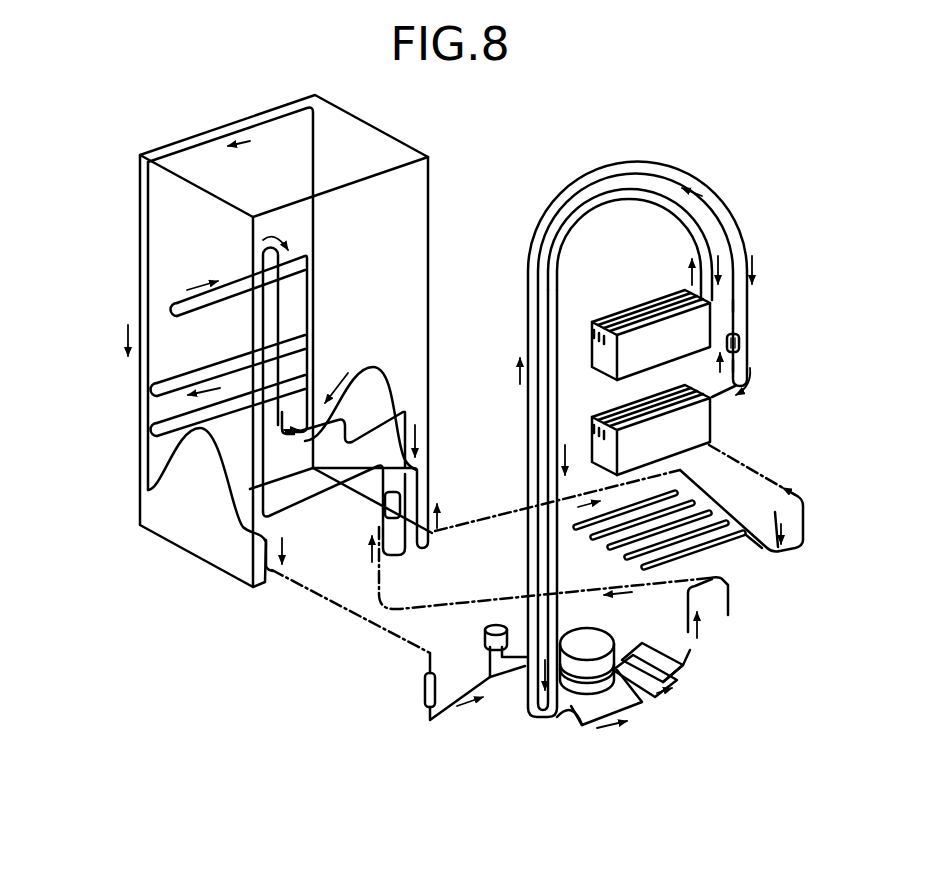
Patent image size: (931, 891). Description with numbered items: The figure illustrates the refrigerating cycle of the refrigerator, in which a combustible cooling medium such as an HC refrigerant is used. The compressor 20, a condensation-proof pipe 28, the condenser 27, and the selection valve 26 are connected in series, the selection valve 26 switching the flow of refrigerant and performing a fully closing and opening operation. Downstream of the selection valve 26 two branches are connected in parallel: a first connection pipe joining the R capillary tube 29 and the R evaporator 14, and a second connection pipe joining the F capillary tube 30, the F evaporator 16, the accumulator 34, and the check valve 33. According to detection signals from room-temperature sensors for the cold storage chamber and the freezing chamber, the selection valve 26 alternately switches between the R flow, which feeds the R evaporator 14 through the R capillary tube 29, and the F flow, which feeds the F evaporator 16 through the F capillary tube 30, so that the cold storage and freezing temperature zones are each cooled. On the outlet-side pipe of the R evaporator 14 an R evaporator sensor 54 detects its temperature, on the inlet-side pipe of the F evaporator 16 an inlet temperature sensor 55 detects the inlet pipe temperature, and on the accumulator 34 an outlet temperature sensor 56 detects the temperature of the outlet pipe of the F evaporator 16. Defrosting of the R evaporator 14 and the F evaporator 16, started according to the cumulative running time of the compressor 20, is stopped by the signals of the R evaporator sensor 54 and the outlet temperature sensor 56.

The R evaporator 14 is at (653, 297).
The F evaporator 16 is at (627, 398).
The compressor 20 is at (647, 697).
The selection valve 26 is at (484, 637).
The condenser 27 is at (727, 540).
The condensation-proof pipe 28 is at (140, 413).
The R capillary tube 29 is at (553, 278).
The F capillary tube 30 is at (530, 324).
The check valve 33 is at (578, 725).
The accumulator 34 is at (739, 326).
The R evaporator sensor 54 is at (733, 300).
The inlet temperature sensor 55 is at (713, 396).
The outlet temperature sensor 56 is at (735, 354).